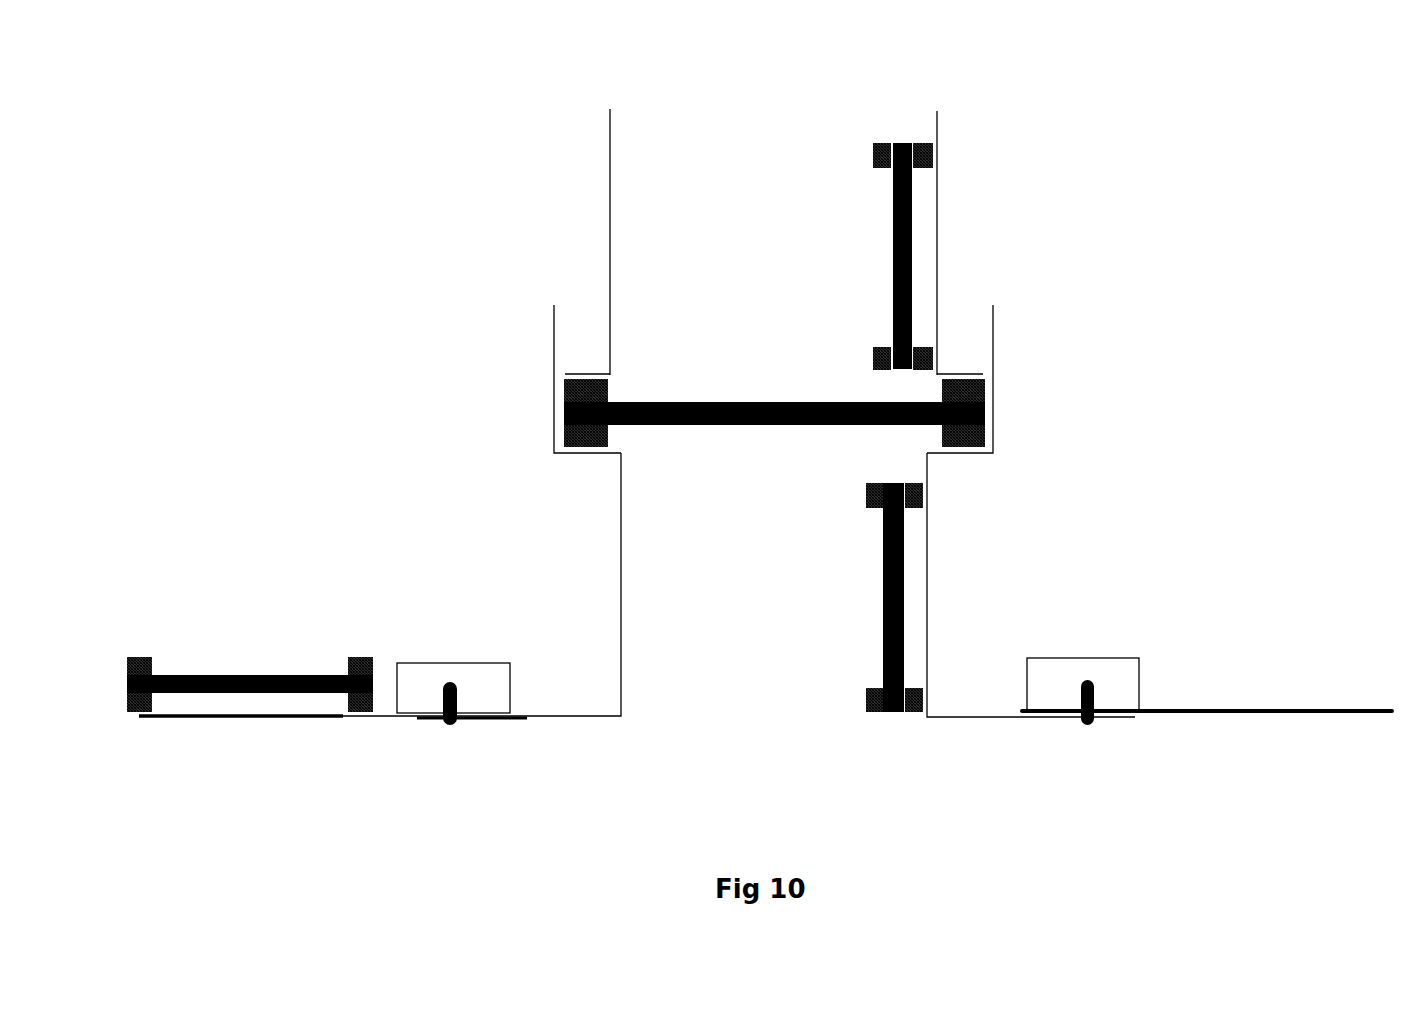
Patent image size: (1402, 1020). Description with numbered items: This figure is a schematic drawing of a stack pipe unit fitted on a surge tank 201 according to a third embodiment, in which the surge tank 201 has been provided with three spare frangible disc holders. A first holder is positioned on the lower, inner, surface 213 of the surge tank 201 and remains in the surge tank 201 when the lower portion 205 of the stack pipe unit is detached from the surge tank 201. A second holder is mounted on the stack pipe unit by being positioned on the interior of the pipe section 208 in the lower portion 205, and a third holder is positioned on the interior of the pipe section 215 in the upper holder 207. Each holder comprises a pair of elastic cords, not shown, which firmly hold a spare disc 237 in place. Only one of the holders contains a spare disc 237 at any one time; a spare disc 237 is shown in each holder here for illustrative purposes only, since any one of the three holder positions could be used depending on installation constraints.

The surge tank 201 is at (1274, 413).
The lower portion 205 is at (621, 538).
The upper holder 207 is at (593, 179).
The pipe section 208 is at (739, 585).
The lower, inner, surface 213 is at (265, 734).
The pipe section 215 is at (695, 242).
The spare disc 237 is at (926, 214).